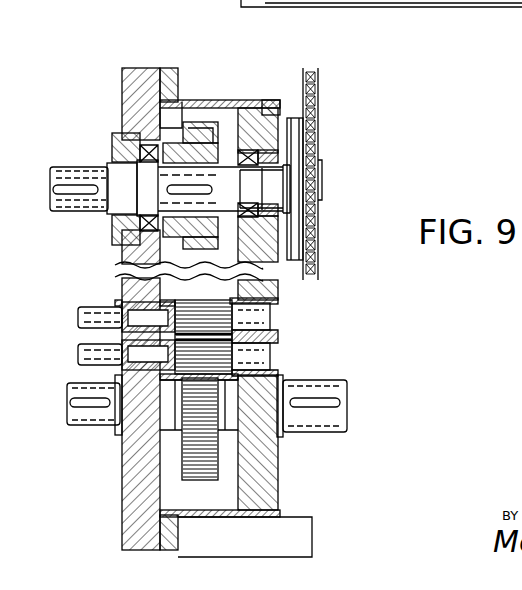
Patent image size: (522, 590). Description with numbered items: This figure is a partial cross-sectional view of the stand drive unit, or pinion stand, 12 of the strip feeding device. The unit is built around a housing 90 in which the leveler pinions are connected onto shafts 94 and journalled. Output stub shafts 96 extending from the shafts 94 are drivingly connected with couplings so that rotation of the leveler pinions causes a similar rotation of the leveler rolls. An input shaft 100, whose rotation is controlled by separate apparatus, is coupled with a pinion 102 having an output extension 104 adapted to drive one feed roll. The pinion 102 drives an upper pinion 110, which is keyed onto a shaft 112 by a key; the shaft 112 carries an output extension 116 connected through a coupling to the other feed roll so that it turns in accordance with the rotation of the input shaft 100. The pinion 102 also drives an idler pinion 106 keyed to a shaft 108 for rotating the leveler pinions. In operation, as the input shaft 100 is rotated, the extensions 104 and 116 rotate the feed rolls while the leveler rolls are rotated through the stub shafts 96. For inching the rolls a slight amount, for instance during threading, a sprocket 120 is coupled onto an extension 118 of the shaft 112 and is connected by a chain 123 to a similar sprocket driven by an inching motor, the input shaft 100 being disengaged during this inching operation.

The stand drive unit 12 is at (141, 48).
The housing 90 is at (280, 462).
The shafts 94 is at (126, 350).
The output stub shafts 96 is at (88, 348).
The input shaft 100 is at (312, 380).
The pinion 102 is at (282, 268).
The output extension 104 is at (74, 421).
The idler pinion 106 is at (215, 462).
The shaft 108 is at (162, 446).
The upper pinion 110 is at (200, 122).
The shaft 112 is at (228, 164).
The output extension 116 is at (64, 166).
The extension 118 is at (318, 166).
The sprocket 120 is at (306, 130).
The chain 123 is at (318, 76).